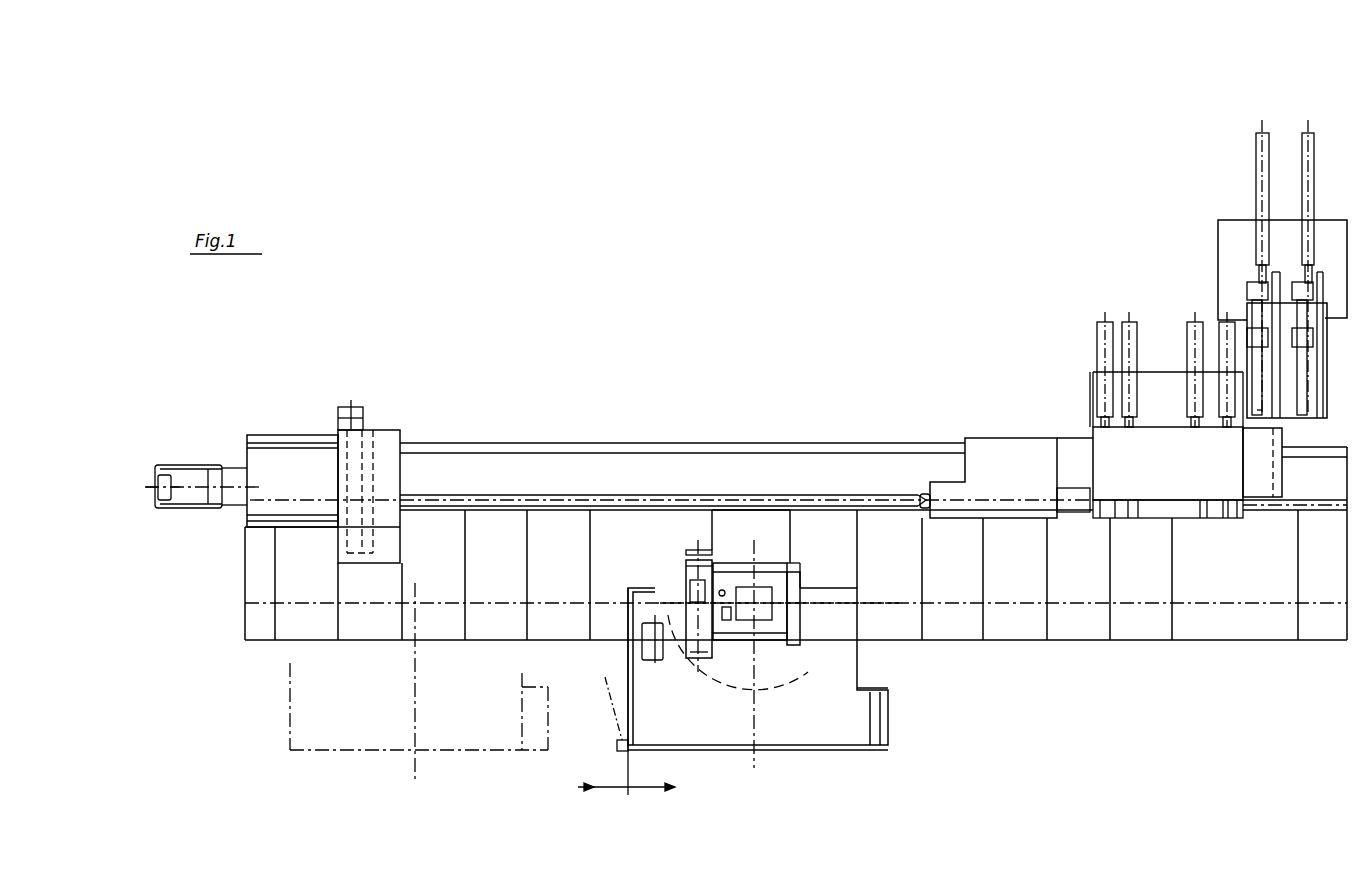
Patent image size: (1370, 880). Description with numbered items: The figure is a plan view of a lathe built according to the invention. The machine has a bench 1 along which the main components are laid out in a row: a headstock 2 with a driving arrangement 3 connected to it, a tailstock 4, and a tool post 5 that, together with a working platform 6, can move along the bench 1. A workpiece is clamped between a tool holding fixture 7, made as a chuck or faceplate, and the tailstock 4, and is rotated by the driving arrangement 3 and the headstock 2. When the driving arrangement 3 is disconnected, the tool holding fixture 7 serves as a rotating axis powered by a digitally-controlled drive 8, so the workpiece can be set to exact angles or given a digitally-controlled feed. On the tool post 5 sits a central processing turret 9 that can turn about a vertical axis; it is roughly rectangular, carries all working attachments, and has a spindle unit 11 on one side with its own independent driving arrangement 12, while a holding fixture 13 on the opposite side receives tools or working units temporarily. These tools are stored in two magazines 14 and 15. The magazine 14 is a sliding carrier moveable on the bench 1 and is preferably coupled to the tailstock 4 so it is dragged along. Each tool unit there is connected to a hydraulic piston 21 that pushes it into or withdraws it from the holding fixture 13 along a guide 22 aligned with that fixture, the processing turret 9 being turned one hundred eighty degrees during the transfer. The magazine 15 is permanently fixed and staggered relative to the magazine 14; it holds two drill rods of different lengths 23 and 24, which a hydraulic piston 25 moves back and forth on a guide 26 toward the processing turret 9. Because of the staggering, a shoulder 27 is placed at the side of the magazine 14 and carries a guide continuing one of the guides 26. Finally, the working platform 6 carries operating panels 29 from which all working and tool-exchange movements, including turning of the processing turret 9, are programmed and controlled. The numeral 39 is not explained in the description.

The bench 1 is at (556, 457).
The headstock 2 is at (286, 450).
The driving arrangement 3 is at (191, 475).
The tailstock 4 is at (994, 447).
The tool post 5 is at (728, 525).
The working platform 6 is at (820, 722).
The tool holding fixture 7 is at (368, 452).
The digitally-controlled drive 8 is at (350, 405).
The processing turret 9 is at (782, 608).
The spindle unit 11 is at (703, 665).
The independent driving arrangement 12 is at (690, 584).
The holding fixture 13 is at (792, 640).
The magazine 14 is at (1152, 394).
The magazine 15 is at (1230, 228).
The hydraulic piston 21 is at (1228, 322).
The guide 22 is at (1232, 518).
The drill rod 23 is at (1255, 360).
The drill rod 24 is at (1295, 318).
The hydraulic piston 25 is at (1305, 135).
The guide 26 is at (1275, 405).
The shoulder 27 is at (1262, 483).
The operating panels 29 is at (618, 665).
The lower guide 39 is at (628, 497).